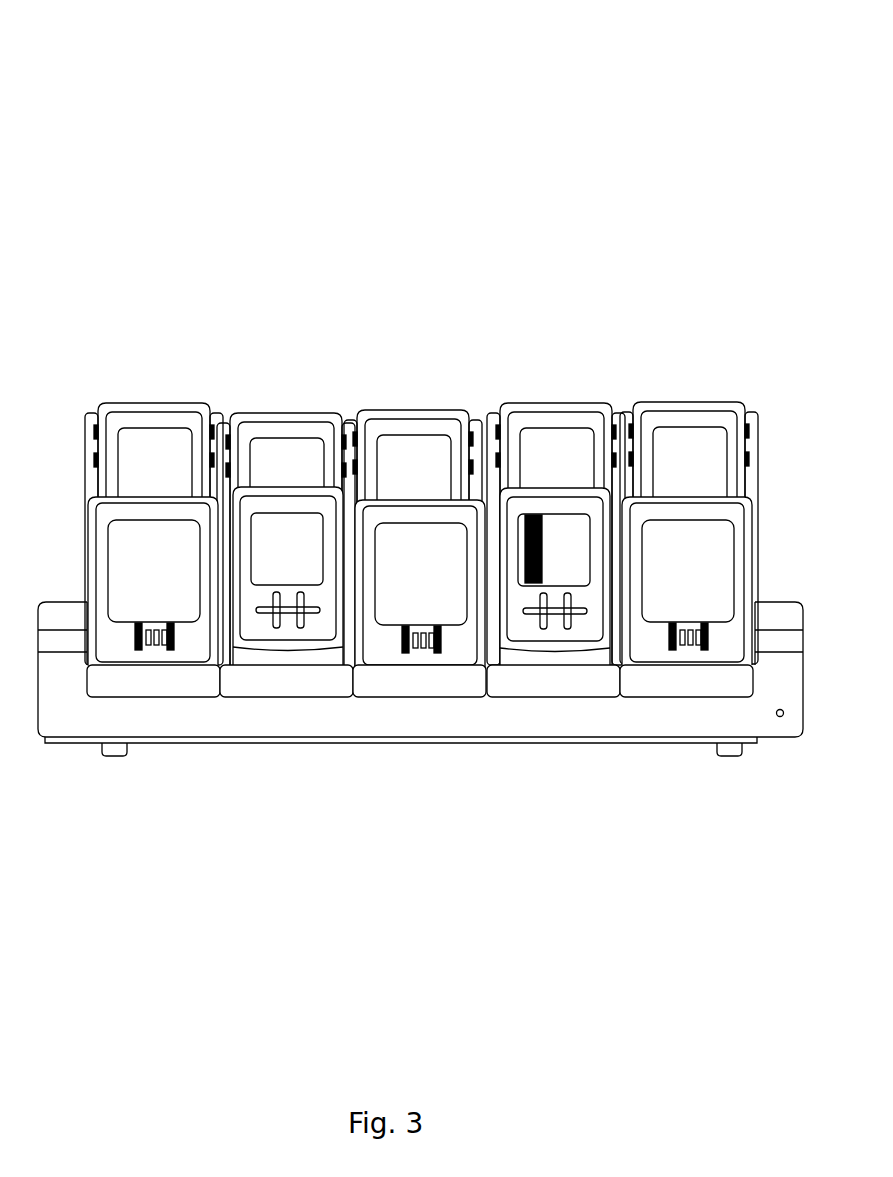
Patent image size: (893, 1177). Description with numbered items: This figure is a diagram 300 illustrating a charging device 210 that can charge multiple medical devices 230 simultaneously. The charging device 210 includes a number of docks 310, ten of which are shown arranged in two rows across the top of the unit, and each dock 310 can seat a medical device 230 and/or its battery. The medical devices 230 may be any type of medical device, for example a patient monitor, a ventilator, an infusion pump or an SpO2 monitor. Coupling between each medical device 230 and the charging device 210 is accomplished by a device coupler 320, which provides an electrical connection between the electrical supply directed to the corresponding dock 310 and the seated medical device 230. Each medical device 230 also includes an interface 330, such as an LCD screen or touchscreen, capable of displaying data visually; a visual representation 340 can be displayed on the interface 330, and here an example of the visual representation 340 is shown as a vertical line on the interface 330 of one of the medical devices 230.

The diagram 300 is at (636, 150).
The charging device 210 is at (778, 742).
The medical device 230 is at (342, 566).
The dock 310 is at (298, 447).
The device coupler 320 is at (155, 652).
The interface 330 is at (720, 402).
The visual representation 340 is at (528, 585).